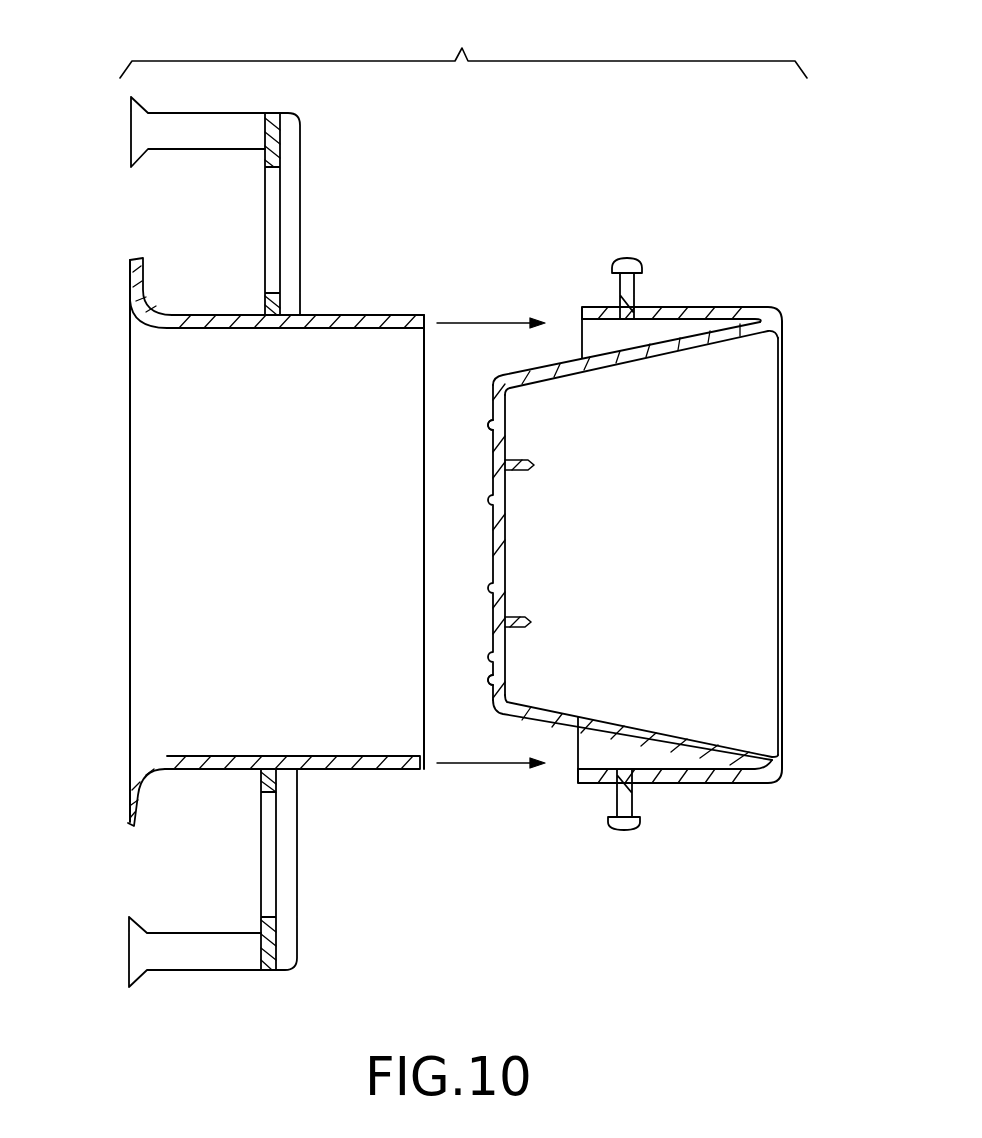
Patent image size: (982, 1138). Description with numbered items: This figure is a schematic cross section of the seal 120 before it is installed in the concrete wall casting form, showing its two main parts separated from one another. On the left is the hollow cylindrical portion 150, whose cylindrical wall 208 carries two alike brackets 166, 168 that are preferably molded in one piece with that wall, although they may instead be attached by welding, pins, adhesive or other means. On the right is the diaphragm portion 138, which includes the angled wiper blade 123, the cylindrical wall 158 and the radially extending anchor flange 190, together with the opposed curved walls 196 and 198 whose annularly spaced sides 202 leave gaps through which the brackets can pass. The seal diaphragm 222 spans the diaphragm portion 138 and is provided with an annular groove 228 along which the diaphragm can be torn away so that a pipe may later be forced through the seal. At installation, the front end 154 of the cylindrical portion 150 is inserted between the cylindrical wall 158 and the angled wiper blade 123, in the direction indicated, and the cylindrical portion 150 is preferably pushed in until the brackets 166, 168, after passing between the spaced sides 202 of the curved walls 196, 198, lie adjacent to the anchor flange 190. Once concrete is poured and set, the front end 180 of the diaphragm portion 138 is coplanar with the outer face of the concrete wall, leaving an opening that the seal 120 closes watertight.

The seal 120 is at (463, 44).
The angled wiper blade 123 is at (652, 364).
The diaphragm portion 138 is at (767, 306).
The hollow cylindrical portion 150 is at (130, 292).
The front end 154 is at (407, 315).
The cylindrical wall 158 is at (668, 307).
The bracket 166 is at (300, 155).
The bracket 168 is at (285, 888).
The front end 180 is at (783, 323).
The anchor flange 190 is at (626, 257).
The curved wall 196 is at (597, 309).
The curved wall 198 is at (597, 778).
The annularly spaced sides 202 is at (587, 309).
The cylindrical wall 208 is at (223, 329).
The seal diaphragm 222 is at (492, 472).
The annular groove 228 is at (504, 425).